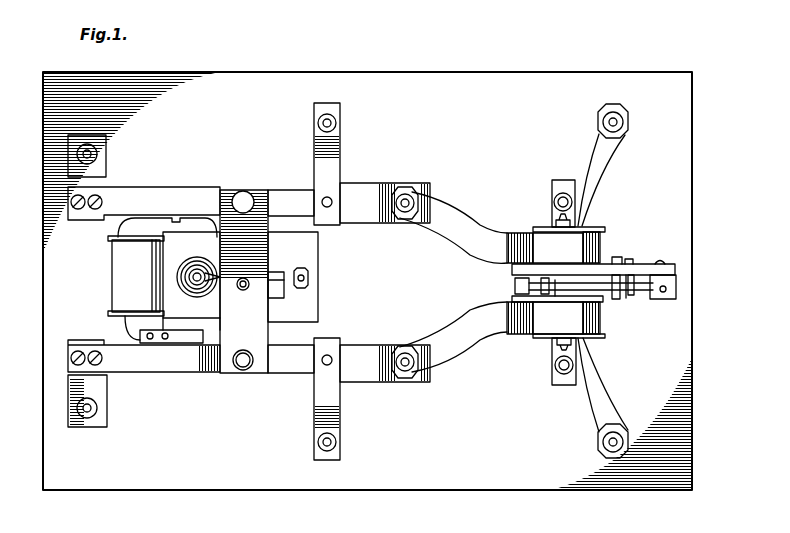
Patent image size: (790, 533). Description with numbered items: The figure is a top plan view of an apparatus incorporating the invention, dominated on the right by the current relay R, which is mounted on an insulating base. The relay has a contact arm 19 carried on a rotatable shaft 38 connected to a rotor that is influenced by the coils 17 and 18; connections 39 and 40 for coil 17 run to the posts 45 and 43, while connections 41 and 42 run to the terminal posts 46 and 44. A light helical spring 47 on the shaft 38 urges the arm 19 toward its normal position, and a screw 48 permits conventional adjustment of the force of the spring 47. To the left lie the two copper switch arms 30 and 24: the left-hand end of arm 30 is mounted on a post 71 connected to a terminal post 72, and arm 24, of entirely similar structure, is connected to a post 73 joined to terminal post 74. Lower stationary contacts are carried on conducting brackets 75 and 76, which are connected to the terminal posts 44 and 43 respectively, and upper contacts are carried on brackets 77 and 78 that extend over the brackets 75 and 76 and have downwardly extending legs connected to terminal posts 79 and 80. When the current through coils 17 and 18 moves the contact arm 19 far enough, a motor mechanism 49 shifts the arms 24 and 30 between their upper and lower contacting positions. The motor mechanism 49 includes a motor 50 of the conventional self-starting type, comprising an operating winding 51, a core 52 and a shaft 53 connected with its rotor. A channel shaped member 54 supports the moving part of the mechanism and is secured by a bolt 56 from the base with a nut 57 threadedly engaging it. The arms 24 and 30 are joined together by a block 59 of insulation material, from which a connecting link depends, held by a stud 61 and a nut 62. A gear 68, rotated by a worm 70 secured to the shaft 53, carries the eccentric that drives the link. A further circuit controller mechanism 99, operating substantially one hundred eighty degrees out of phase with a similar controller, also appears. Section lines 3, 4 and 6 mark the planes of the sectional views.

The coil 17 is at (598, 243).
The coil 18 is at (538, 330).
The contact arm 19 is at (617, 290).
The switch arm 24 is at (298, 362).
The switch arm 30 is at (288, 196).
The rotatable shaft 38 is at (603, 283).
The connection 39 is at (600, 153).
The connection 40 is at (478, 226).
The connection 41 is at (612, 402).
The connection 42 is at (474, 330).
The post 43 is at (407, 200).
The terminal post 44 is at (407, 366).
The post 45 is at (622, 120).
The terminal post 46 is at (602, 442).
The helical spring 47 is at (628, 305).
The screw 48 is at (676, 288).
The motor mechanism 49 is at (208, 306).
The motor 50 is at (111, 257).
The operating winding 51 is at (117, 279).
The core 52 is at (125, 320).
The shaft 53 is at (208, 273).
The channel shaped member 54 is at (315, 244).
The bolt 56 is at (308, 286).
The nut 57 is at (310, 276).
The block 59 is at (232, 190).
The stud 61 is at (241, 291).
The nut 62 is at (250, 292).
The gear 68 is at (276, 270).
The worm 70 is at (200, 290).
The post 71 is at (98, 185).
The terminal post 72 is at (88, 150).
The post 73 is at (72, 377).
The terminal post 74 is at (92, 408).
The conducting bracket 75 is at (365, 348).
The conducting bracket 76 is at (365, 183).
The bracket 77 is at (320, 398).
The bracket 78 is at (336, 162).
The terminal post 79 is at (318, 443).
The terminal post 80 is at (332, 120).
The circuit controller mechanism 99 is at (185, 340).
The current relay R is at (610, 210).
The section line 3- 3 is at (445, 44).
The section line 4- 4 is at (13, 391).
The section line 6- 6 is at (150, 280).